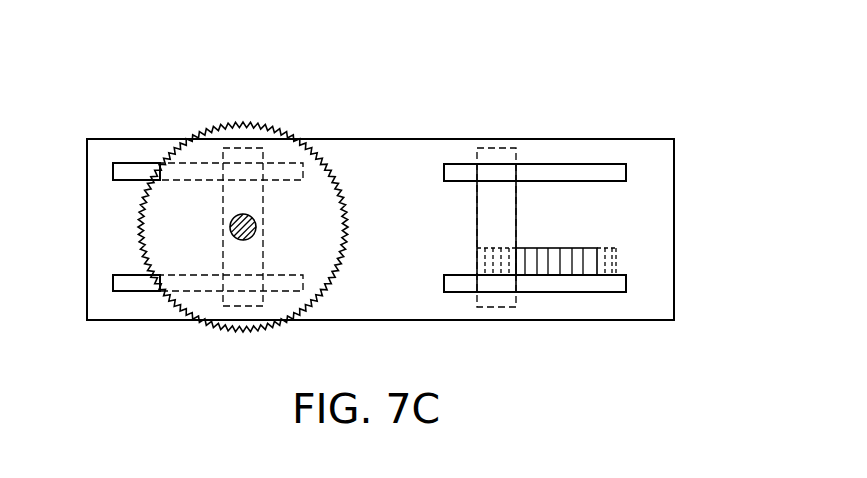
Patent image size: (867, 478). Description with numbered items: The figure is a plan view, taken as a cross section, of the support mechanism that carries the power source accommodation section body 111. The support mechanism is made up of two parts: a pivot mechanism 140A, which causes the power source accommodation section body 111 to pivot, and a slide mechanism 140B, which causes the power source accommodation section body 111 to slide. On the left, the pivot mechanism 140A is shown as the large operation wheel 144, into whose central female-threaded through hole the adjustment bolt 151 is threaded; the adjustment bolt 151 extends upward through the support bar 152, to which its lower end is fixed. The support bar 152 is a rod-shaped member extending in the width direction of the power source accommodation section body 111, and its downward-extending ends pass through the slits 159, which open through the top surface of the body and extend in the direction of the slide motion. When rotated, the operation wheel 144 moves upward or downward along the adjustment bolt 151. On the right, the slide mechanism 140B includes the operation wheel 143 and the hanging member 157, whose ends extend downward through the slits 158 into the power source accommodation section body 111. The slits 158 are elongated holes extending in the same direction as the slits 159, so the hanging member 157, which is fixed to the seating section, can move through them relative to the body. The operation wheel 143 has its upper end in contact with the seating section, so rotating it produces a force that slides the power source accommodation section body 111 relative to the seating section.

The power source accommodation section body 111 is at (674, 210).
The pivot mechanism 140A is at (298, 95).
The slide mechanism 140B is at (590, 115).
The operation wheel 143 is at (590, 260).
The operation wheel 144 is at (287, 135).
The adjustment bolt 151 is at (254, 218).
The support bar 152 is at (242, 148).
The hanging member 157 is at (508, 148).
The slits 158 is at (617, 164).
The slits 159 is at (132, 165).